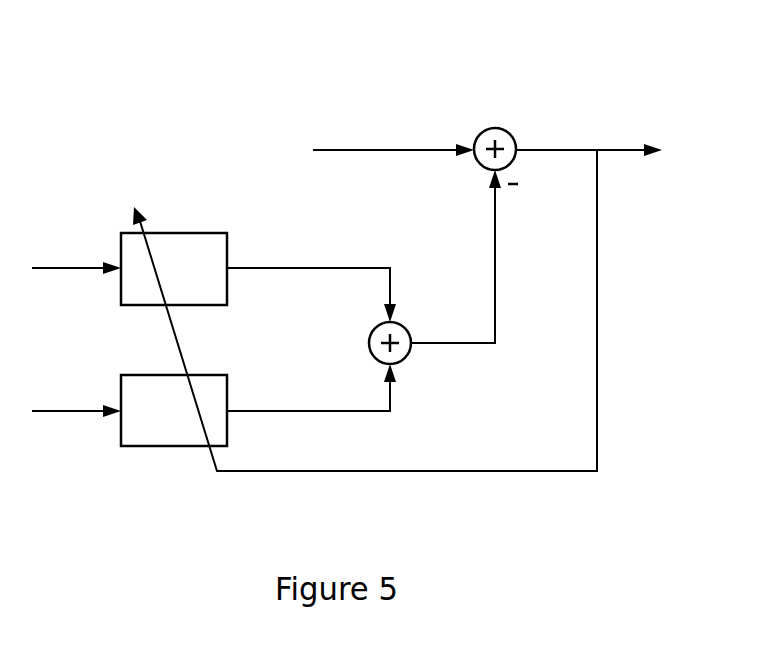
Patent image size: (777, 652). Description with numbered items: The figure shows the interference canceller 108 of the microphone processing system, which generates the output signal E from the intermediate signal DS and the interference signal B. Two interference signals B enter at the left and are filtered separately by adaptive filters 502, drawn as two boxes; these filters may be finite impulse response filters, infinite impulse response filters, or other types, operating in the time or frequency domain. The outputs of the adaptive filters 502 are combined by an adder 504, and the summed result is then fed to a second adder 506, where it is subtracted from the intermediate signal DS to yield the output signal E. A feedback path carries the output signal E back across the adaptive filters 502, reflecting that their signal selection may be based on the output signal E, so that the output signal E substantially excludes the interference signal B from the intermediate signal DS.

The interference canceller 108 is at (611, 69).
The adaptive filters 502 is at (173, 233).
The adder 504 is at (408, 328).
The adder 506 is at (498, 127).